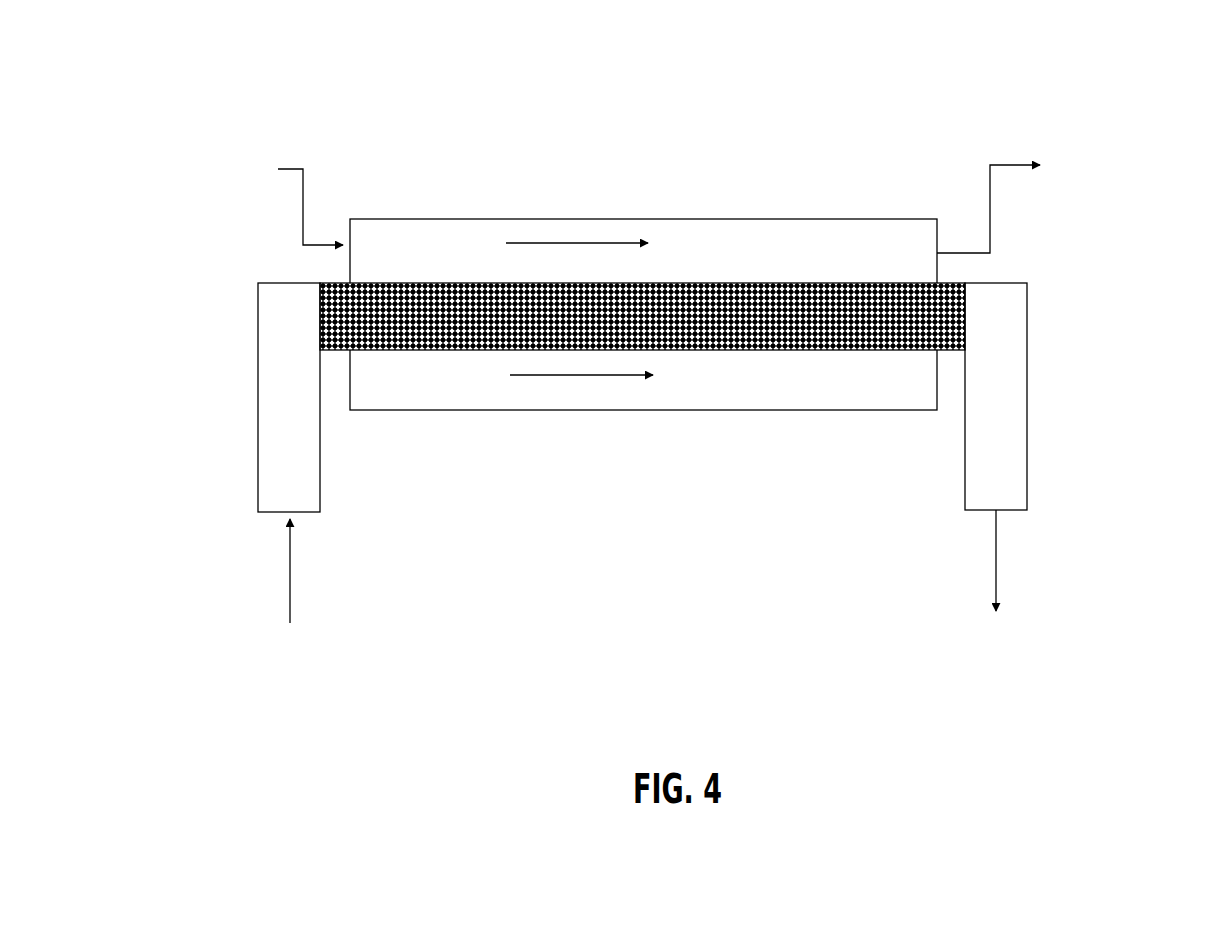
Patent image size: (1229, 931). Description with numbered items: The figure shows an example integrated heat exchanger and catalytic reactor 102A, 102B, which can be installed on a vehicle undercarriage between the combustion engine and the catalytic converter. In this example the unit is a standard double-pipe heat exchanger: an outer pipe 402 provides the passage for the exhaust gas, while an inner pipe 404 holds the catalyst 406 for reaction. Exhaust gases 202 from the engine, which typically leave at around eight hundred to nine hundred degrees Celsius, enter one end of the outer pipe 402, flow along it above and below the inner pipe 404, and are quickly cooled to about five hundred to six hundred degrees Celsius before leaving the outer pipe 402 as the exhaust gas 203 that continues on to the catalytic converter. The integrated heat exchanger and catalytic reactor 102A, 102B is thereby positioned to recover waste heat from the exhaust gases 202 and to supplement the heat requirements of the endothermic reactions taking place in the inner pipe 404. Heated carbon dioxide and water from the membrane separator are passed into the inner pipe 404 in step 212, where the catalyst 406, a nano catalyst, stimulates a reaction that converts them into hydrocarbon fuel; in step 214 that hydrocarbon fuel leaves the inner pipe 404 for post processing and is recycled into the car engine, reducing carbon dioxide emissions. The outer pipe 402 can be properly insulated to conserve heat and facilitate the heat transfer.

The double-pipe heat exchanger 102A is at (680, 381).
The catalytic reactor 102B is at (966, 84).
The outer pipe 402 is at (643, 281).
The inner pipe 404 is at (642, 411).
The catalyst 406 is at (642, 364).
The exhaust gases 202 is at (176, 254).
The exhaust gas emission 203 is at (1096, 250).
The heated CO2 and H2O feed 212 is at (276, 733).
The hydrocarbon fuel recycle 214 is at (929, 703).